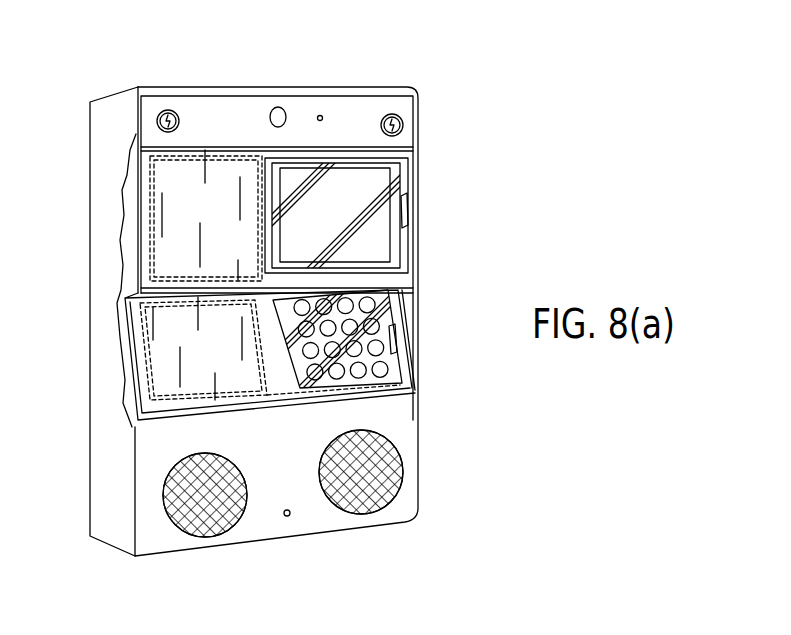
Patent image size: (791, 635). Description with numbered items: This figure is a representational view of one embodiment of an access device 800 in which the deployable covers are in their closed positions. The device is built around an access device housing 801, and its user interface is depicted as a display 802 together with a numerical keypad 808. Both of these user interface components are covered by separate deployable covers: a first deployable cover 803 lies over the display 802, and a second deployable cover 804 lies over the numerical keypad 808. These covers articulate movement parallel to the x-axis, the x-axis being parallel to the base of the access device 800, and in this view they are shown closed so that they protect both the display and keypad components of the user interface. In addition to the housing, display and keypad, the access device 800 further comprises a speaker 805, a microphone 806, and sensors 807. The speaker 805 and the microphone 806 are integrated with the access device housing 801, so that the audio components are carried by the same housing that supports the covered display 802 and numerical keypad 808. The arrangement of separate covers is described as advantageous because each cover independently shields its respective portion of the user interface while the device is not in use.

The access device 800 is at (138, 56).
The access device housing 801 is at (98, 117).
The display 802 is at (380, 177).
The deployable cover 803 is at (183, 202).
The deployable cover 804 is at (183, 333).
The speaker 805 is at (210, 537).
The microphone 806 is at (290, 517).
The sensors 807 is at (326, 117).
The numerical keypad 808 is at (360, 305).